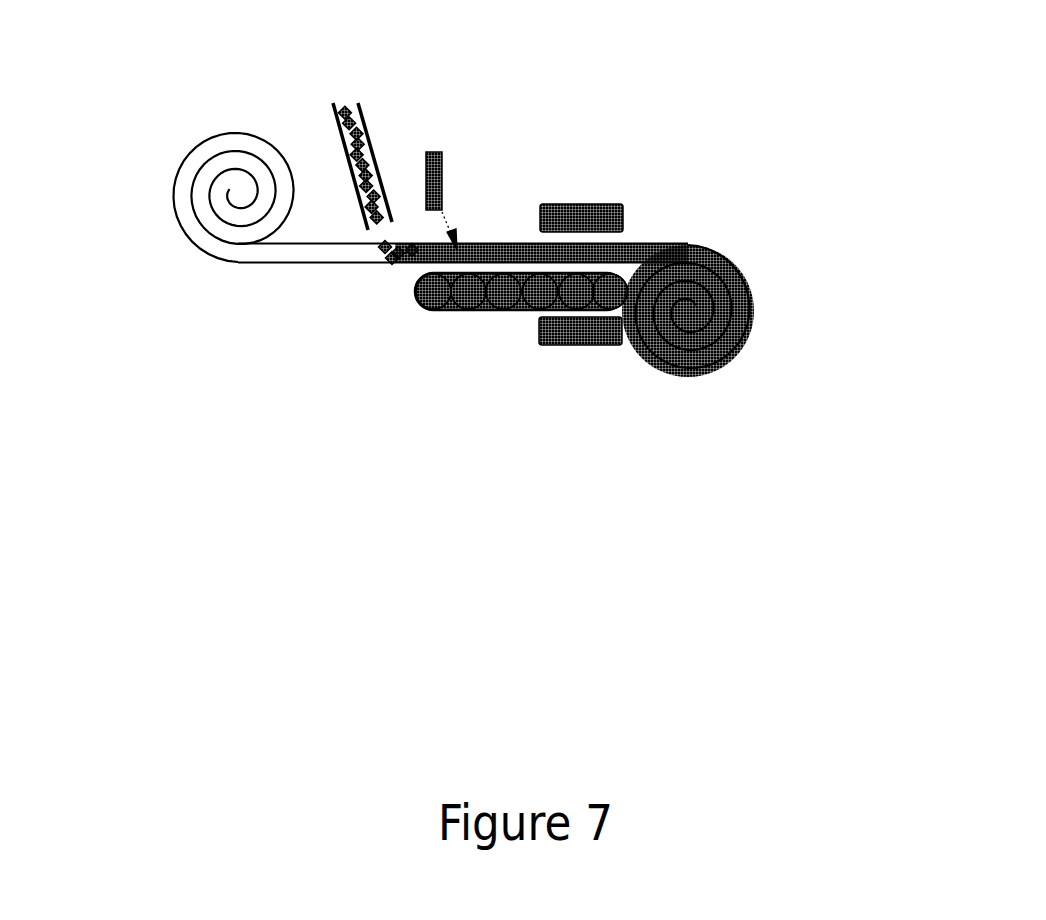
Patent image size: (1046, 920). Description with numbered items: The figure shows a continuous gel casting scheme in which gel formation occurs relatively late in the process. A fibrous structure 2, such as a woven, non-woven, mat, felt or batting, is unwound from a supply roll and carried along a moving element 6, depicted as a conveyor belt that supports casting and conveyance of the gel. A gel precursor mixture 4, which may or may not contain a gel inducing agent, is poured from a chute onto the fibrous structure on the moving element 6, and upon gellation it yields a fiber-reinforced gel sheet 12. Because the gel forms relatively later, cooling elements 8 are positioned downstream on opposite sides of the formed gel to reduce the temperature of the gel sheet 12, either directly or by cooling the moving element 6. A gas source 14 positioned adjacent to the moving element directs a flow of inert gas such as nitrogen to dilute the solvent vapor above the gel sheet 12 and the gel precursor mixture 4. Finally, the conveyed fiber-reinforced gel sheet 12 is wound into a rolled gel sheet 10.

The fibrous structure 2 is at (146, 196).
The gel precursor mixture 4 is at (396, 205).
The moving element 6 is at (394, 304).
The cooling element 8 is at (544, 253).
The rolled gel sheet 10 is at (772, 290).
The gel sheet 12 is at (685, 231).
The gas source 14 is at (462, 139).